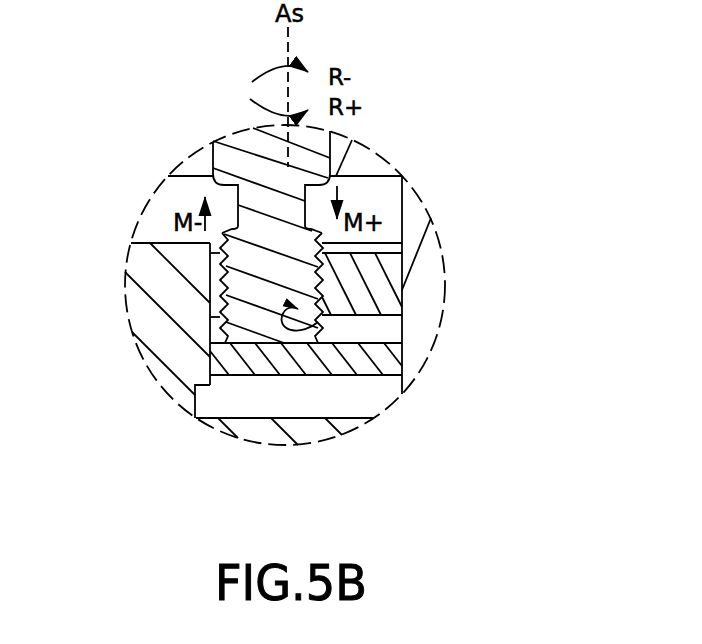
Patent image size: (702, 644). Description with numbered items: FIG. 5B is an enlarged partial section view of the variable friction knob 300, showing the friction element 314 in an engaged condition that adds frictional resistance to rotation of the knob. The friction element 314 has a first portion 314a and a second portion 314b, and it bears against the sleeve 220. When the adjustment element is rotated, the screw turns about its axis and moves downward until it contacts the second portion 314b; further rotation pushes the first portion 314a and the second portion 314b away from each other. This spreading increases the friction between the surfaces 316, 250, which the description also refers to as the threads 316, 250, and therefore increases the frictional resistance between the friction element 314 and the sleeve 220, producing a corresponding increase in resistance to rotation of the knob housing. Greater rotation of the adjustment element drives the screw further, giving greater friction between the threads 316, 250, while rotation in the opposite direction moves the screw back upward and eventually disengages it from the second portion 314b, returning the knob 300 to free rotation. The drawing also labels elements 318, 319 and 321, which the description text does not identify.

The variable friction knob 300 is at (434, 128).
The threaded shaft 318 is at (242, 144).
The surface 316 is at (194, 265).
The sleeve 220 is at (215, 344).
The surface 250 is at (226, 392).
The upper flange of nut 319 is at (322, 246).
The friction element 314 is at (356, 285).
The first portion 314a is at (378, 296).
The second portion 314b is at (386, 366).
The gap 321 is at (313, 337).